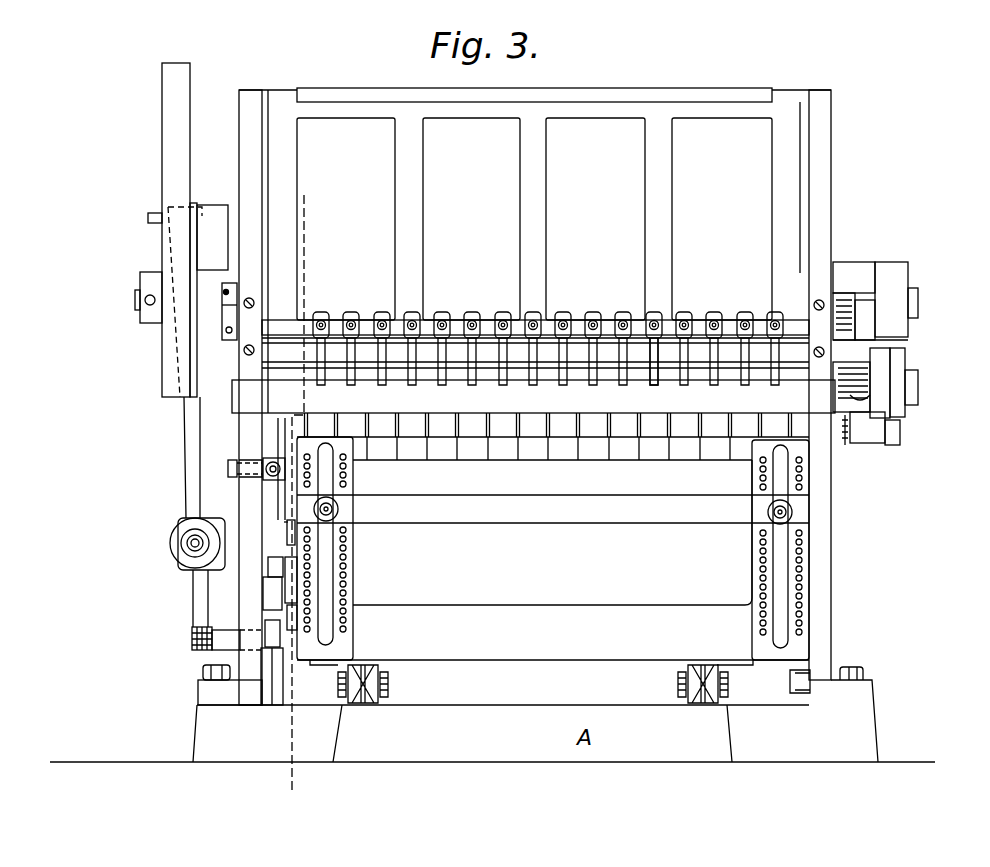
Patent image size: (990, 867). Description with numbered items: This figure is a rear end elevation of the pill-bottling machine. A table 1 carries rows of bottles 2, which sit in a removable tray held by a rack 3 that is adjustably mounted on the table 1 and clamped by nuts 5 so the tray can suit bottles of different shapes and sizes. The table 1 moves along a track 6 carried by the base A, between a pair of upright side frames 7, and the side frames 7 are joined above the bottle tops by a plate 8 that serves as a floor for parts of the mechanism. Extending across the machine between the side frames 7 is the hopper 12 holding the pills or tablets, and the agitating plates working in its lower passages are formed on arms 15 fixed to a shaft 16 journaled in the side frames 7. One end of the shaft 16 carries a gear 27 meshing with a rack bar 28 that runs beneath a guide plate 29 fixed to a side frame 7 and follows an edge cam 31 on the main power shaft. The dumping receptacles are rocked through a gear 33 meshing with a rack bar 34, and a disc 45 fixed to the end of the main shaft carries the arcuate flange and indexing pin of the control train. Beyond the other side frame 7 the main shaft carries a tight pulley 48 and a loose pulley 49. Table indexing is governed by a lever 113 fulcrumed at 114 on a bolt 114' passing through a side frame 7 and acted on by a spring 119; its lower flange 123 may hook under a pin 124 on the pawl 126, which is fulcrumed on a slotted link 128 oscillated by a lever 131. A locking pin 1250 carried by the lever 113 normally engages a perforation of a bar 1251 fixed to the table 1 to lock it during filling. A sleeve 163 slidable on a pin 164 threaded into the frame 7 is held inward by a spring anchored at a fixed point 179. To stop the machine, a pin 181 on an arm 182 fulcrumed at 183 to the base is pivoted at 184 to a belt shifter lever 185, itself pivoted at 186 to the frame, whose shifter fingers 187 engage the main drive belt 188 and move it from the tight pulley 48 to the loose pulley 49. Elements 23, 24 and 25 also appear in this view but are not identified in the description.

The table 1 is at (553, 560).
The bottles 2 is at (500, 443).
The rack 3 is at (530, 473).
The nuts 5 is at (582, 275).
The track 6 is at (705, 700).
The side frames 7 is at (239, 428).
The plate 8 is at (280, 782).
The hopper 12 is at (534, 204).
The arm 15 is at (713, 360).
The shaft 16 is at (693, 322).
The screw 23 is at (225, 292).
The block 24 is at (222, 290).
The pin 25 is at (226, 310).
The gear 27 is at (867, 333).
The rack bar 28 is at (853, 300).
The guide plate 29 is at (840, 310).
The edge cam 31 is at (840, 262).
The gear 33 is at (858, 420).
The rack bar 34 is at (863, 400).
The disc 45 is at (890, 262).
The tight pulley 48 is at (220, 235).
The loose pulley 49 is at (162, 341).
The lever 113 is at (283, 437).
The fulcrum 114 is at (318, 434).
The bolt 114' is at (178, 460).
The spring 119 is at (262, 442).
The flange 123 is at (265, 590).
The pin 124 is at (268, 565).
The pawl 126 is at (293, 593).
The slotted link 128 is at (293, 605).
The lever 131 is at (270, 630).
The sleeve 163 is at (867, 447).
The pin 164 is at (915, 447).
The fixed point 179 is at (845, 447).
The pin 181 is at (230, 640).
The arm 182 is at (215, 672).
The fulcrum 183 is at (272, 690).
The pivot 184 is at (205, 635).
The belt shifter lever 185 is at (184, 437).
The pivot 186 is at (178, 540).
The shifter fingers 187 is at (150, 212).
The main drive belt 188 is at (268, 55).
The locking pin 1250 is at (287, 527).
The perforated bar 1251 is at (287, 530).